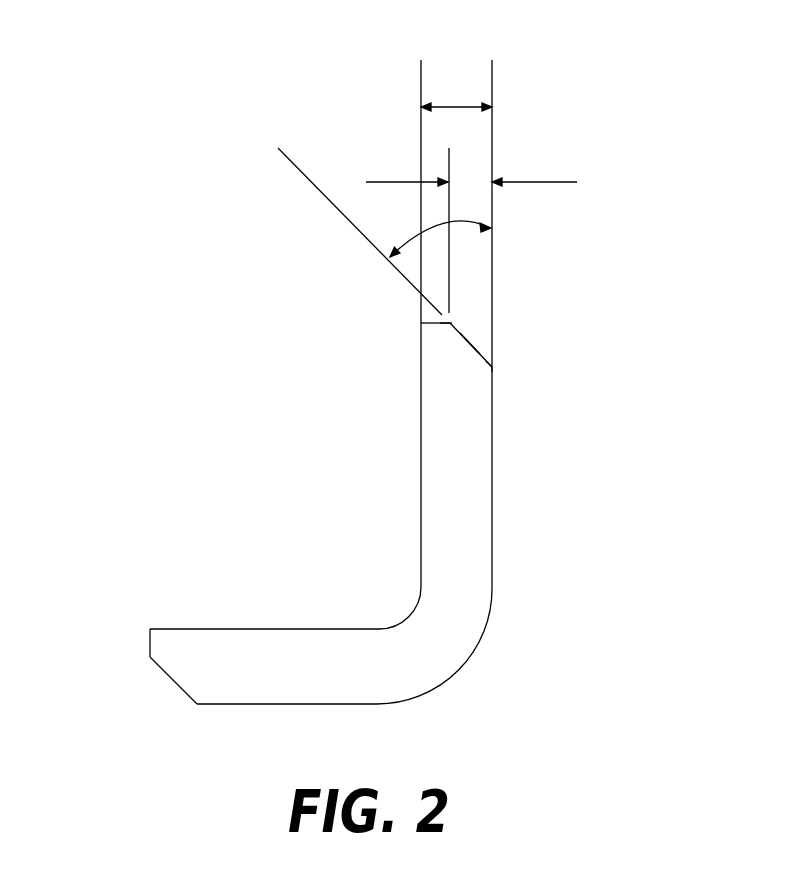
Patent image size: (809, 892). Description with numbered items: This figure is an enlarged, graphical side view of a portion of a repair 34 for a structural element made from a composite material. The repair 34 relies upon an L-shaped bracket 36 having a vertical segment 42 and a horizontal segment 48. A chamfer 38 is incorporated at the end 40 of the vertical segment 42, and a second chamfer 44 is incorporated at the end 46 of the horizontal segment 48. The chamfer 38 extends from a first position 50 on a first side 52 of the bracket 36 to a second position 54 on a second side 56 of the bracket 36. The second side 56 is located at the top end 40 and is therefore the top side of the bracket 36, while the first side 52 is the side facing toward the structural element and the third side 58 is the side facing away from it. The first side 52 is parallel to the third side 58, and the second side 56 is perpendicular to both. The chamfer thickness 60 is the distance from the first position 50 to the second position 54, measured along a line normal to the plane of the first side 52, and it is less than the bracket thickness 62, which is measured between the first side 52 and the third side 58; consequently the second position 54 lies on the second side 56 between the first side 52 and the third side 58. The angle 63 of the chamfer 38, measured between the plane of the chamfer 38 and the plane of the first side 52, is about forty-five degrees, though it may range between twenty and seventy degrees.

The repair 34 is at (704, 348).
The L-shaped bracket 36 is at (456, 523).
The chamfer 38 is at (468, 338).
The end of the vertical segment 40 is at (421, 324).
The vertical segment 42 is at (420, 457).
The chamfer 44 is at (173, 680).
The end of the horizontal segment 46 is at (150, 645).
The horizontal segment 48 is at (197, 628).
The first position 50 is at (493, 366).
The first side 52 is at (493, 558).
The second position 54 is at (452, 320).
The second side 56 is at (442, 322).
The third side 58 is at (420, 545).
The chamfer thickness 60 is at (463, 180).
The bracket thickness 62 is at (455, 105).
The angle of the chamfer 63 is at (392, 257).